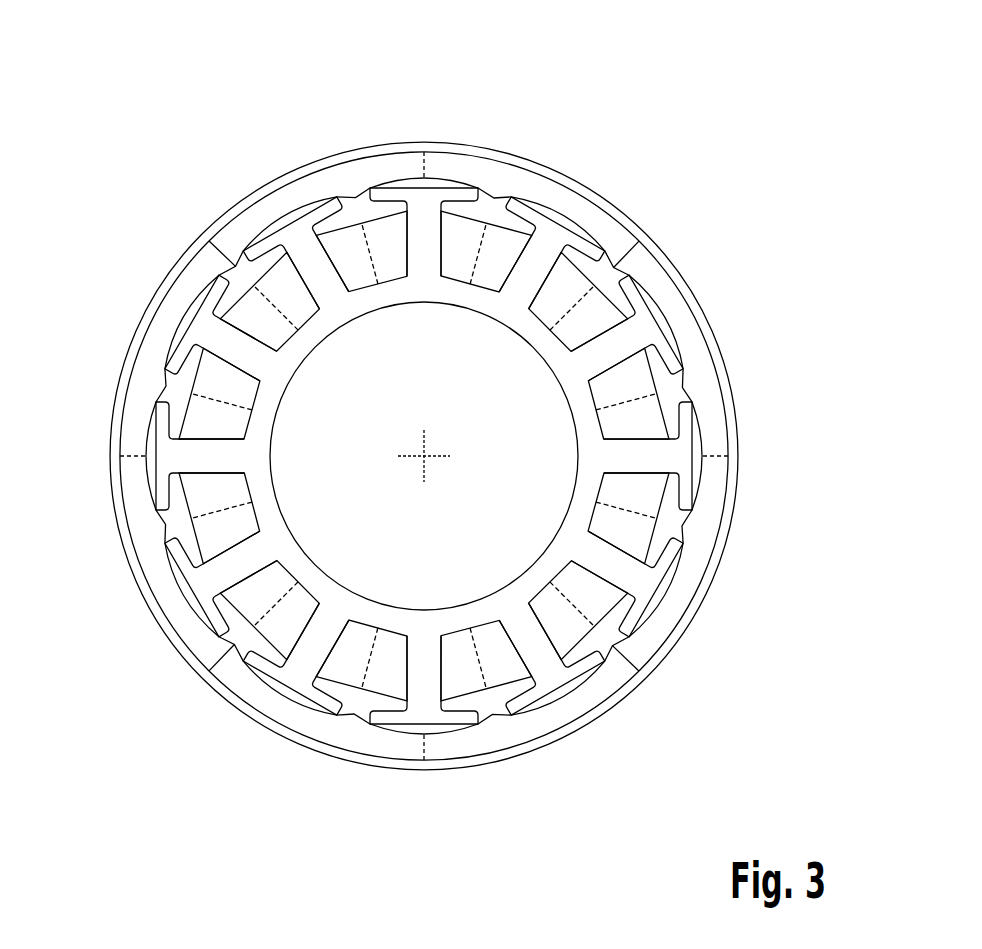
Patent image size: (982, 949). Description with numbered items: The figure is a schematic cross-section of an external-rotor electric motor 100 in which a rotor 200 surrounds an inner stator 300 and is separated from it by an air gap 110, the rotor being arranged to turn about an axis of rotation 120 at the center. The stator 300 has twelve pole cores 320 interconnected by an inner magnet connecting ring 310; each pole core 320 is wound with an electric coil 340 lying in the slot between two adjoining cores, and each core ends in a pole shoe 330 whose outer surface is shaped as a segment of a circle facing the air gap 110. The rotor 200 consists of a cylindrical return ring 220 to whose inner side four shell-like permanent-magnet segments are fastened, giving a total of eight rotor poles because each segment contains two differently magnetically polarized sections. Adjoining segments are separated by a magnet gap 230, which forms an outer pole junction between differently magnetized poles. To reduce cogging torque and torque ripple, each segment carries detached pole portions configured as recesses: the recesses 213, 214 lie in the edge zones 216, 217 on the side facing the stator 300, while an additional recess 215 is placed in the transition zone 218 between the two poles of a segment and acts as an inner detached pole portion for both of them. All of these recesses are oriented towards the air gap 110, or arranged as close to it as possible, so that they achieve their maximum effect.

The electric motor 100 is at (255, 92).
The air gap 110 is at (372, 188).
The axis of rotation 120 is at (432, 446).
The rotor 200 is at (675, 657).
The detached pole portion 213 is at (257, 240).
The detached pole portion 214 is at (592, 236).
The recess 215 is at (432, 180).
The edge zone 216 is at (263, 215).
The edge zone 217 is at (590, 208).
The transition zone 218 is at (414, 170).
The return ring 220 is at (235, 690).
The magnet gap 230 is at (640, 248).
The stator 300 is at (468, 572).
The magnet connecting ring 310 is at (575, 503).
The pole core 320 is at (320, 612).
The pole shoe 330 is at (318, 700).
The electric coil 340 is at (290, 592).